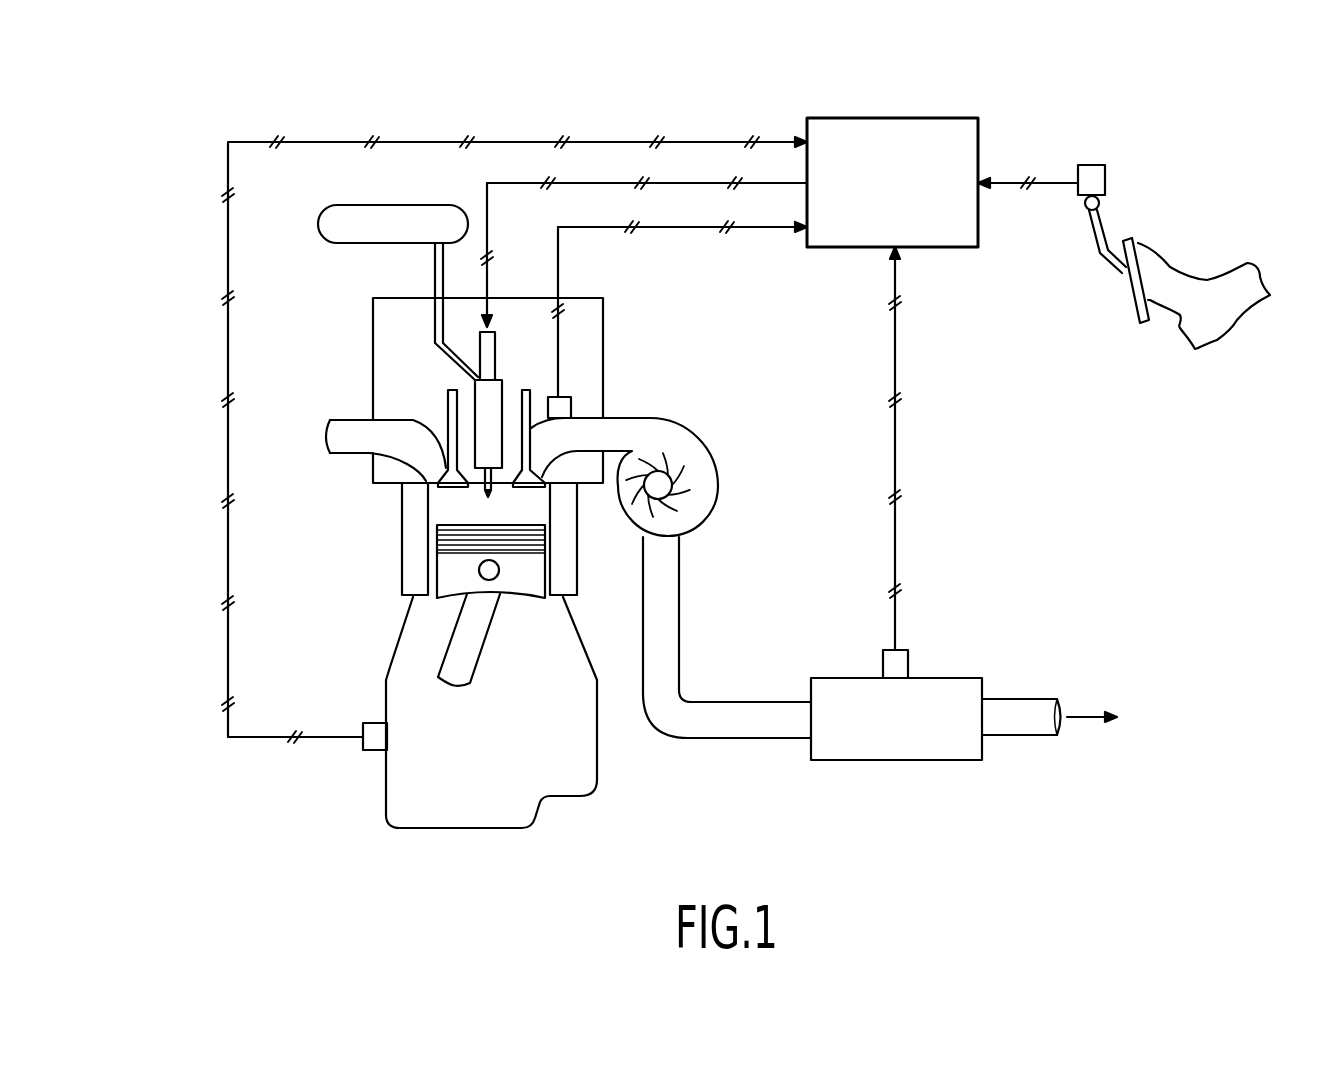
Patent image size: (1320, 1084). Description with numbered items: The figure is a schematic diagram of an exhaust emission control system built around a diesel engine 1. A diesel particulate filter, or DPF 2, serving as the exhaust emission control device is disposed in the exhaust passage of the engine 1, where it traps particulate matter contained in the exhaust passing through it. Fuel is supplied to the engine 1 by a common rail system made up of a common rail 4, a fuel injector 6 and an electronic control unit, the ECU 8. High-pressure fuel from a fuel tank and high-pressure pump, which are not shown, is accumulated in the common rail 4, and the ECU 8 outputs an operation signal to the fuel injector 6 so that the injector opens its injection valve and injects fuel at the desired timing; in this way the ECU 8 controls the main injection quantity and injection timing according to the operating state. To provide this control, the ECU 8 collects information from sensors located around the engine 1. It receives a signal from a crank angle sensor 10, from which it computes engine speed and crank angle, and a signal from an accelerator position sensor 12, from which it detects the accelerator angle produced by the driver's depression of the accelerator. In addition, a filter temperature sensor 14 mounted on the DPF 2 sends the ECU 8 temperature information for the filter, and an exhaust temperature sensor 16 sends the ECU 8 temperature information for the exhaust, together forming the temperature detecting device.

The engine 1 is at (343, 535).
The diesel particulate filter (DPF) 2 is at (855, 760).
The common rail 4 is at (338, 205).
The fuel injector 6 is at (498, 392).
The electronic control unit (ECU) 8 is at (978, 133).
The crank angle sensor 10 is at (372, 743).
The accelerator position sensor 12 is at (1100, 180).
The filter temperature sensor 14 is at (906, 667).
The exhaust temperature sensor 16 is at (565, 408).